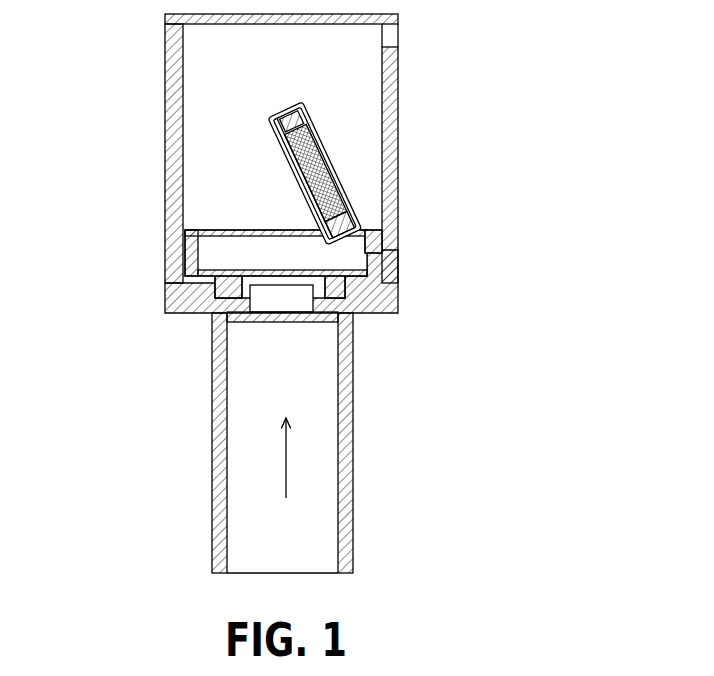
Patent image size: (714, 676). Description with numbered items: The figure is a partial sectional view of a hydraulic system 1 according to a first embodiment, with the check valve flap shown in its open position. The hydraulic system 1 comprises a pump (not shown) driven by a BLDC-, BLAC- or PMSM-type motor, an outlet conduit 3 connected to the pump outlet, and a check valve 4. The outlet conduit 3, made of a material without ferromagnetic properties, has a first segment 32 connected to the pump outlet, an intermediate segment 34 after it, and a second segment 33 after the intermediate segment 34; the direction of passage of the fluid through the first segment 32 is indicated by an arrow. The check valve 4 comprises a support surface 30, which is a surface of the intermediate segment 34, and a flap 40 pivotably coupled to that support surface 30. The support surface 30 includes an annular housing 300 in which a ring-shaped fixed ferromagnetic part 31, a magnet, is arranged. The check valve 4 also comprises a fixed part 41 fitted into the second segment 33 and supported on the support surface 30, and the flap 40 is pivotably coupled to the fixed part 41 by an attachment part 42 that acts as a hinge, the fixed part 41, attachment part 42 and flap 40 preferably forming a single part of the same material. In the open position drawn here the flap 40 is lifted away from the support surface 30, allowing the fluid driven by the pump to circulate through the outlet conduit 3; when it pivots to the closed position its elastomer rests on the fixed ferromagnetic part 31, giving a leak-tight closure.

The hydraulic system 1 is at (120, 73).
The outlet conduit 3 is at (289, 187).
The check valve 4 is at (282, 242).
The support surface 30 is at (192, 297).
The fixed ferromagnetic part 31 is at (345, 293).
The first segment 32 is at (353, 459).
The second segment 33 is at (398, 135).
The intermediate segment 34 is at (398, 292).
The flap 40 is at (287, 173).
The fixed part 41 is at (185, 248).
The attachment part 42 is at (376, 240).
The housing 300 is at (220, 312).